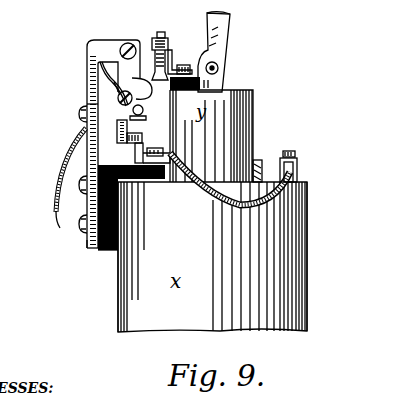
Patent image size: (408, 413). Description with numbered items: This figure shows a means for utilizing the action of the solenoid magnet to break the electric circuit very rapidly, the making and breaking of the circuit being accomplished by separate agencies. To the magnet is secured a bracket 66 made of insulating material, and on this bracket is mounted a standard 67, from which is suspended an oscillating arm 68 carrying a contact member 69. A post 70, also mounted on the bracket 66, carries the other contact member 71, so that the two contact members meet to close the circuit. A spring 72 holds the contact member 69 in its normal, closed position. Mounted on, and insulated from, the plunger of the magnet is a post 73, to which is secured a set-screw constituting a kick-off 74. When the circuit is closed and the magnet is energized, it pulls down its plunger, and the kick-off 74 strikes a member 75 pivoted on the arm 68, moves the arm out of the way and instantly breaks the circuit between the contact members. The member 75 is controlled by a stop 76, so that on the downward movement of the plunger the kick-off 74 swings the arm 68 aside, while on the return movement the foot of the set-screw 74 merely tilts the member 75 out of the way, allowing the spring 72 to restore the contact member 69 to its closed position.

The bracket 66 is at (112, 252).
The standard 67 is at (87, 247).
The oscillating arm 68 is at (139, 47).
The contact member 69 is at (122, 148).
The post 70 is at (139, 152).
The contact member 71 is at (133, 131).
The spring 72 is at (107, 103).
The post 73 is at (172, 54).
The kick-off 74 is at (162, 32).
The member 75 is at (147, 92).
The stop 76 is at (123, 115).